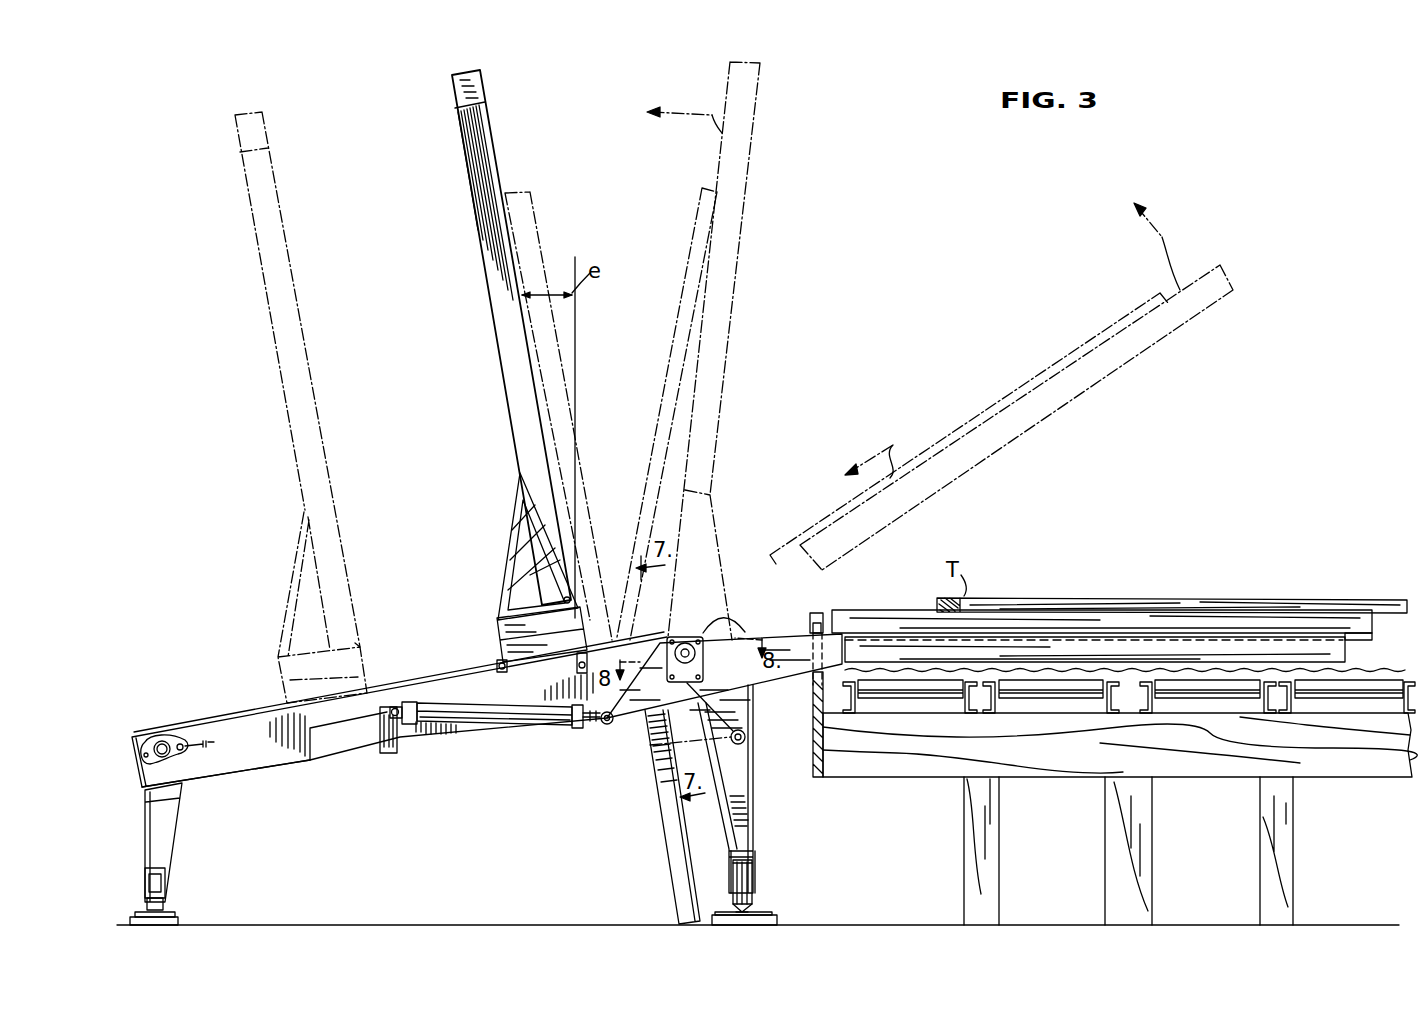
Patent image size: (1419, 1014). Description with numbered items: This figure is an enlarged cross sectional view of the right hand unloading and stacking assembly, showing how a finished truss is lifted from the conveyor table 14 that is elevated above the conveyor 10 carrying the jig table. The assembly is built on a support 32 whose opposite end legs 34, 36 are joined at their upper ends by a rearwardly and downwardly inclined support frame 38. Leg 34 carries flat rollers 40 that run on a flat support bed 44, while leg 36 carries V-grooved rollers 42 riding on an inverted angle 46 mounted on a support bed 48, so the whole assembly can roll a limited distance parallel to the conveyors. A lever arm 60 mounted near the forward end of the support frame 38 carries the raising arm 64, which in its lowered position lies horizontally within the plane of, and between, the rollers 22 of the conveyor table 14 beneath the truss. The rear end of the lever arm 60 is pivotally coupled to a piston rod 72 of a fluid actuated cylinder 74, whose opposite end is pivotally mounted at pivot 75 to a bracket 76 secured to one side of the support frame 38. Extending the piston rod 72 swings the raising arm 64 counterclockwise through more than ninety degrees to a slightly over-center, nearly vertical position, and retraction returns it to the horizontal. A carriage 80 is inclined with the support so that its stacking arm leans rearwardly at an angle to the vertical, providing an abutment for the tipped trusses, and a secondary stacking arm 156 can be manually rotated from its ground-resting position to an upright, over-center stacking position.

The conveyor 10 is at (1049, 698).
The conveyor table 14 is at (1374, 622).
The rollers 22 is at (890, 611).
The support 32 is at (250, 732).
The leg 34 is at (167, 813).
The leg 36 is at (743, 767).
The support frame 38 is at (293, 767).
The rollers 40 is at (147, 878).
The rollers 42 is at (755, 893).
The flat support bed 44 is at (180, 922).
The inverted angle 46 is at (727, 902).
The support bed 48 is at (777, 920).
The lever arm 60 is at (633, 707).
The raising arm 64 is at (727, 357).
The piston rod 72 is at (593, 727).
The fluid actuated cylinder 74 is at (510, 730).
The pivotal mounting 75 is at (394, 706).
The bracket 76 is at (387, 755).
The carriage 80 is at (488, 584).
The secondary stacking arm 156 is at (668, 827).